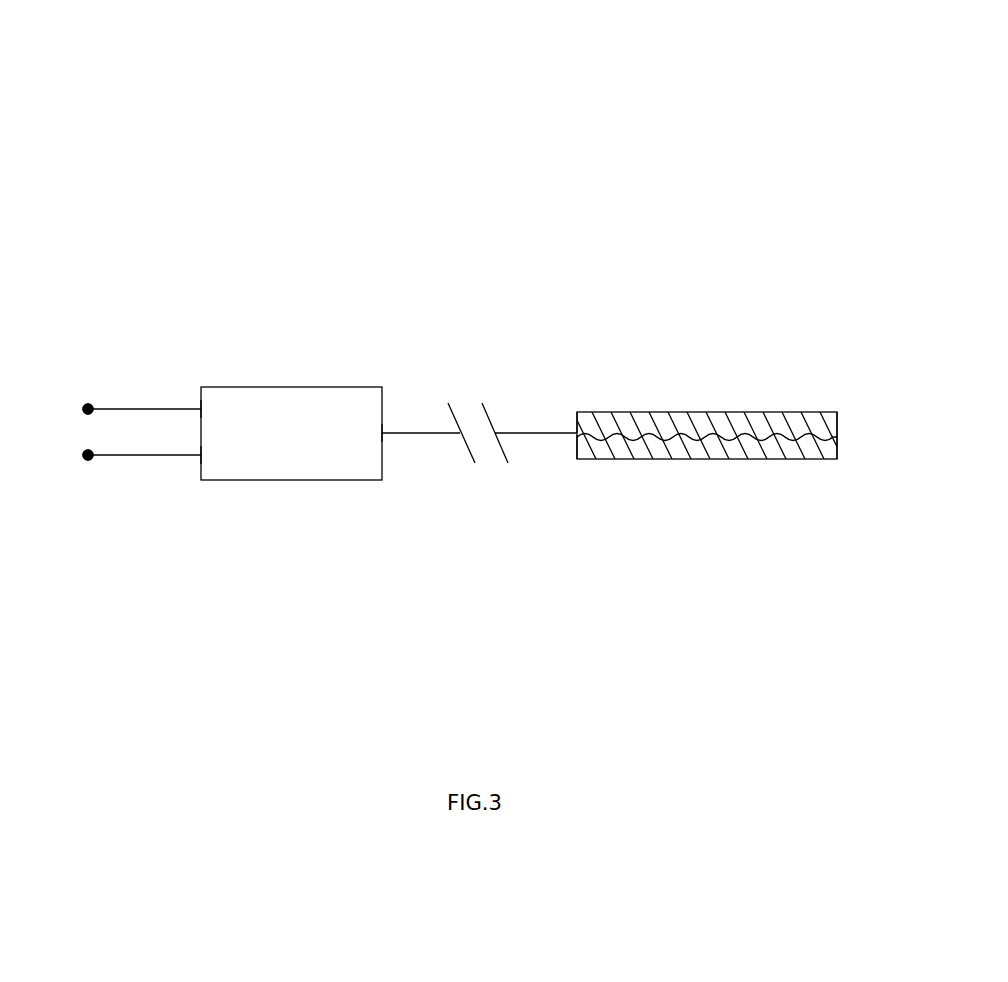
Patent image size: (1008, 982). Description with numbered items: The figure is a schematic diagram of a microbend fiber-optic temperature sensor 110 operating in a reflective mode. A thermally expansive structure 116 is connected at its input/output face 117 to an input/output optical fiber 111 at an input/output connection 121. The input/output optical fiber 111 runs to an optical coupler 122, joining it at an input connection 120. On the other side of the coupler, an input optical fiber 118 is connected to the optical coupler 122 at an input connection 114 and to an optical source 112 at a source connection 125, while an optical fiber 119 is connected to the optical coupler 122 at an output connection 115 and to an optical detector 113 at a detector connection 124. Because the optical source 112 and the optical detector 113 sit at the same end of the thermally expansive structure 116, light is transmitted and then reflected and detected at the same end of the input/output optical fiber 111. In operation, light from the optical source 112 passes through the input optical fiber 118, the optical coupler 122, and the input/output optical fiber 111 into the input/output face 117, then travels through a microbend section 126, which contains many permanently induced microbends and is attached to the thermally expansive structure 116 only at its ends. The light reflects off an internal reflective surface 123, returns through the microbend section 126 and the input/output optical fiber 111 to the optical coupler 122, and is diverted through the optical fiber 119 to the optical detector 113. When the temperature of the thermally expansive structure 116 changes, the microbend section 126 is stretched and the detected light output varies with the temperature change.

The microbend fiber-optic temperature sensor 110 is at (469, 172).
The input/output optical fiber 111 is at (525, 432).
The optical source 112 is at (68, 410).
The optical detector 113 is at (68, 456).
The input connection 114 is at (200, 405).
The output connection 115 is at (200, 463).
The thermally expansive structure 116 is at (728, 462).
The input/output face 117 is at (573, 412).
The input optical fiber 118 is at (143, 403).
The optical fiber 119 is at (143, 463).
The input connection 120 is at (383, 432).
The input/output connection 121 is at (577, 436).
The optical coupler 122 is at (298, 490).
The internal reflective surface 123 is at (840, 437).
The detector connection 124 is at (85, 460).
The source connection 125 is at (87, 406).
The microbend section 126 is at (708, 437).